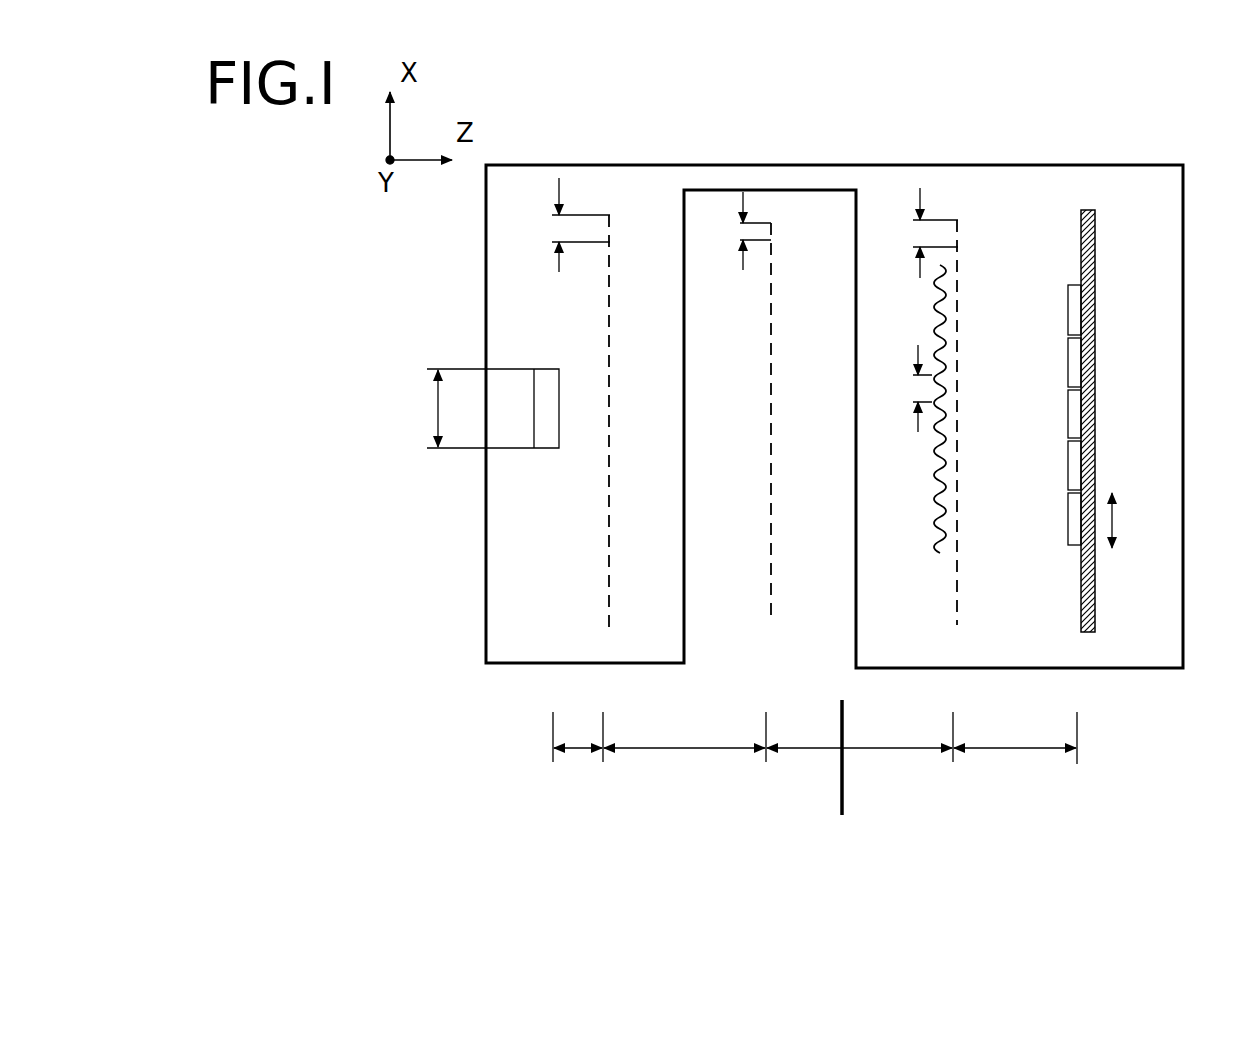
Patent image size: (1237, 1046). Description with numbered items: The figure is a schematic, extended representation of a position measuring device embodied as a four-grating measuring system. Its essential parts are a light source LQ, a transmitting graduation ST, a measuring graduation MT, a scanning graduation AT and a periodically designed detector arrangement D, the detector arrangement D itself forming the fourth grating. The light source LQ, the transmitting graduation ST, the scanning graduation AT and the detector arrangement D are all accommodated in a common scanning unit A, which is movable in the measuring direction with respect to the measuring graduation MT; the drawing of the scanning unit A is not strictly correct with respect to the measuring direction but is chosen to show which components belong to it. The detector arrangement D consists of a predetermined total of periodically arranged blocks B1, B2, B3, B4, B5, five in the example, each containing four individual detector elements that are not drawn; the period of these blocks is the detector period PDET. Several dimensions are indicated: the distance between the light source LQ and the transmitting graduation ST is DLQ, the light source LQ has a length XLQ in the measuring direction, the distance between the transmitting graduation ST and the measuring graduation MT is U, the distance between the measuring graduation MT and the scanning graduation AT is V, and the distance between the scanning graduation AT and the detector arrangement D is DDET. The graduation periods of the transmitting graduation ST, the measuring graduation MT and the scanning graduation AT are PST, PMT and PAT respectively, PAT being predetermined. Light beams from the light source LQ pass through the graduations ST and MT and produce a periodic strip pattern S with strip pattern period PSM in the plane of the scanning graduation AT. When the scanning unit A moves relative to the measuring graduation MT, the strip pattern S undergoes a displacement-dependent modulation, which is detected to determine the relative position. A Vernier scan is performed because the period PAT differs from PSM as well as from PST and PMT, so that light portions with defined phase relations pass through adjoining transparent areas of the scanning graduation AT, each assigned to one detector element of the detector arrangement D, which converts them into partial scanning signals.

The scanning unit A is at (1183, 613).
The light source LQ is at (541, 443).
The length of the light source XLQ is at (410, 408).
The transmitting graduation ST is at (607, 587).
The graduation period of the transmitting graduation PST is at (556, 225).
The measuring graduation MT is at (768, 595).
The graduation period of the measuring graduation PMT is at (730, 231).
The scanning graduation AT is at (955, 616).
The graduation period of the scanning graduation PAT is at (914, 233).
The strip pattern S is at (935, 320).
The strip pattern period PSM is at (899, 388).
The detector arrangement D is at (1080, 588).
The block of detector elements B1 is at (1068, 520).
The block of detector elements B2 is at (1068, 467).
The block of detector elements B3 is at (1068, 415).
The block of detector elements B4 is at (1068, 363).
The block of detector elements B5 is at (1068, 311).
The detector period PDET is at (1143, 521).
The distance between measuring graduation and scanning graduation V is at (848, 750).
The distance between transmitting graduation and measuring graduation U is at (665, 750).
The distance between light source and transmitting graduation DLQ is at (575, 750).
The distance between scanning graduation and detector arrangement DDET is at (1017, 750).